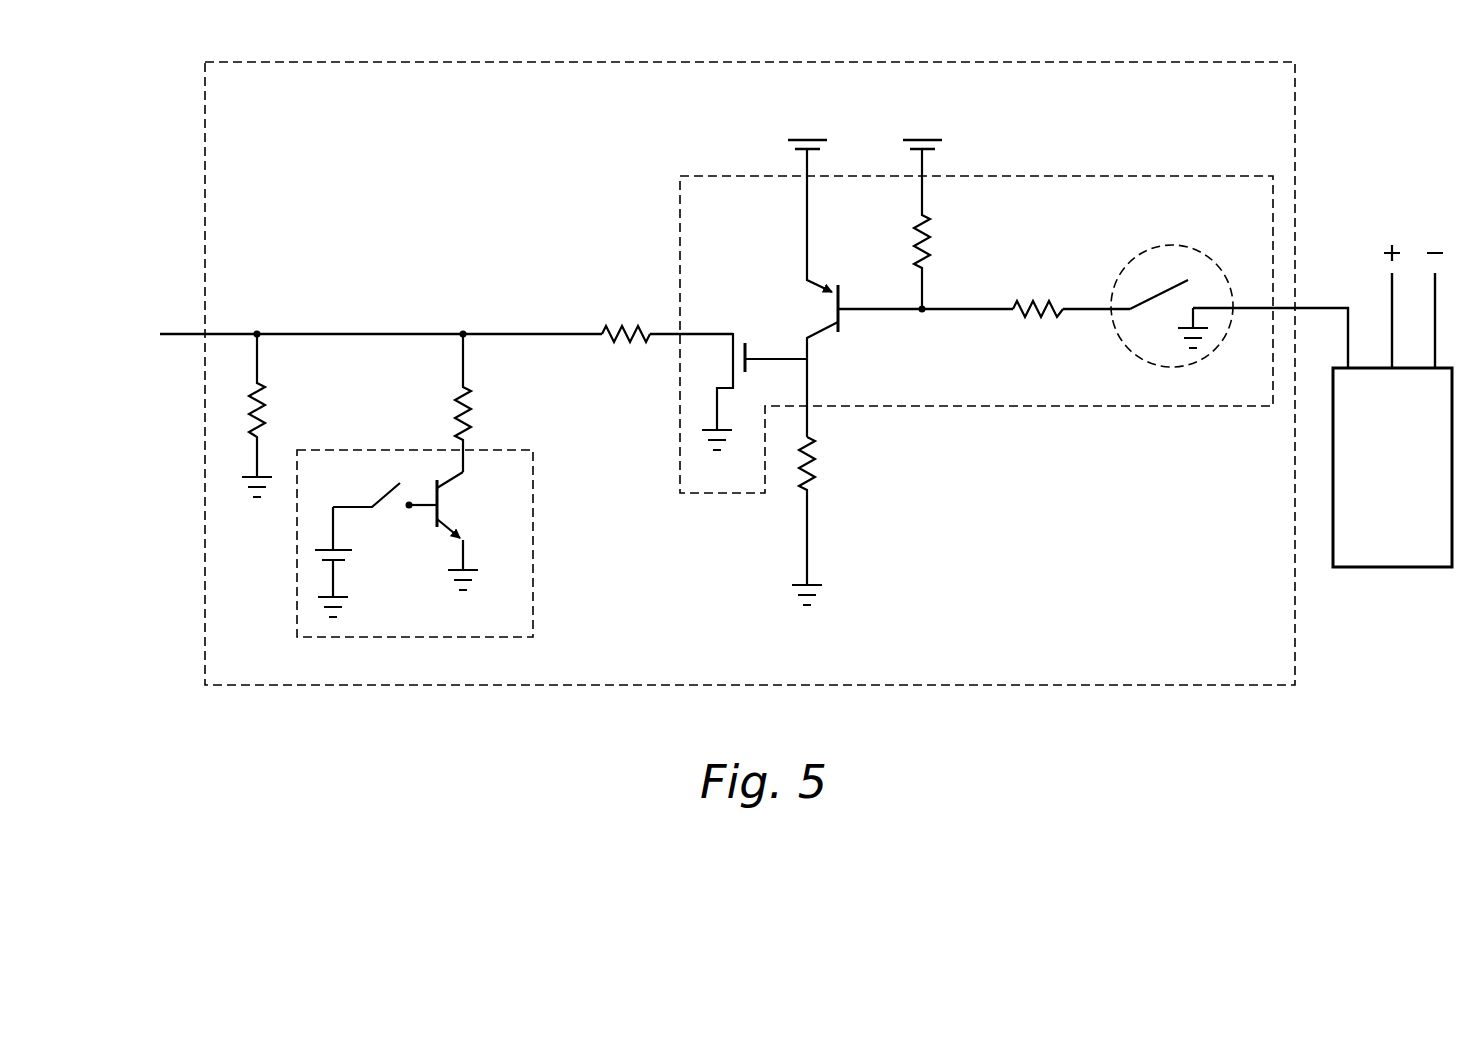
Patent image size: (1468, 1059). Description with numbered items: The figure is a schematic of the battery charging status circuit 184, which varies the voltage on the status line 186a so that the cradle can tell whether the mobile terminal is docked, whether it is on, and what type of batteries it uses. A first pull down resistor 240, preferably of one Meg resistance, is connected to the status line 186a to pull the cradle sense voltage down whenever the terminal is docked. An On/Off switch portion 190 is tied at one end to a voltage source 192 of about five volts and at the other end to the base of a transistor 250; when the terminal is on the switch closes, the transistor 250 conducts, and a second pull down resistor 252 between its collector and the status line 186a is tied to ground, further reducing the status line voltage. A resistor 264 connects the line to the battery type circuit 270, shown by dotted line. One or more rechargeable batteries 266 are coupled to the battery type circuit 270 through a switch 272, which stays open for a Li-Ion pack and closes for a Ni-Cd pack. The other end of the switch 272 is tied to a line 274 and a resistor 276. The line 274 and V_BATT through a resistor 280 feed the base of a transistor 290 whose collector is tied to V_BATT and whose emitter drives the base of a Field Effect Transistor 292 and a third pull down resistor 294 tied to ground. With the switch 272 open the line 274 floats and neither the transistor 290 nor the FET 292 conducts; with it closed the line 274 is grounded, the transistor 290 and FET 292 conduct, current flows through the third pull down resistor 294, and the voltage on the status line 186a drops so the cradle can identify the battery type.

The battery charging status circuit 184 is at (1197, 745).
The status line 186a is at (172, 333).
The On/Off switch portion 190 is at (392, 490).
The voltage source 192 is at (325, 560).
The first pull down resistor 240 is at (265, 415).
The transistor 250 is at (455, 480).
The second pull down resistor 252 is at (470, 412).
The resistor 264 is at (612, 322).
The rechargeable batteries 266 is at (1408, 568).
The battery type circuit 270 is at (1145, 172).
The switch 272 is at (1180, 243).
The line 274 is at (1088, 306).
The resistor 276 is at (1035, 318).
The resistor 280 is at (932, 237).
The transistor 290 is at (826, 292).
The Field Effect Transistor (FET) 292 is at (750, 337).
The third pull down resistor 294 is at (818, 457).